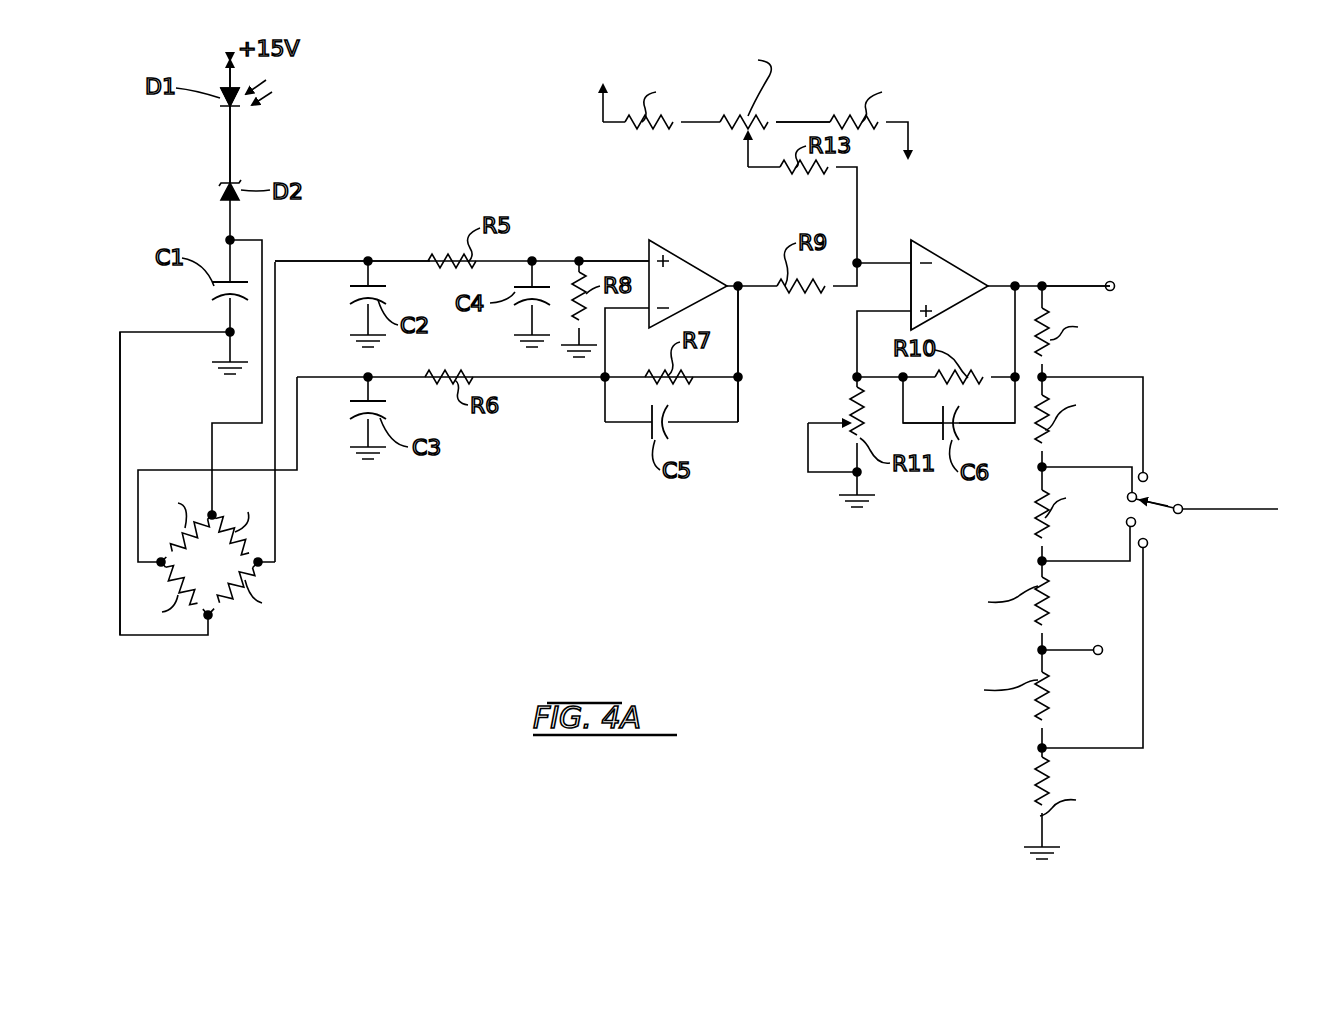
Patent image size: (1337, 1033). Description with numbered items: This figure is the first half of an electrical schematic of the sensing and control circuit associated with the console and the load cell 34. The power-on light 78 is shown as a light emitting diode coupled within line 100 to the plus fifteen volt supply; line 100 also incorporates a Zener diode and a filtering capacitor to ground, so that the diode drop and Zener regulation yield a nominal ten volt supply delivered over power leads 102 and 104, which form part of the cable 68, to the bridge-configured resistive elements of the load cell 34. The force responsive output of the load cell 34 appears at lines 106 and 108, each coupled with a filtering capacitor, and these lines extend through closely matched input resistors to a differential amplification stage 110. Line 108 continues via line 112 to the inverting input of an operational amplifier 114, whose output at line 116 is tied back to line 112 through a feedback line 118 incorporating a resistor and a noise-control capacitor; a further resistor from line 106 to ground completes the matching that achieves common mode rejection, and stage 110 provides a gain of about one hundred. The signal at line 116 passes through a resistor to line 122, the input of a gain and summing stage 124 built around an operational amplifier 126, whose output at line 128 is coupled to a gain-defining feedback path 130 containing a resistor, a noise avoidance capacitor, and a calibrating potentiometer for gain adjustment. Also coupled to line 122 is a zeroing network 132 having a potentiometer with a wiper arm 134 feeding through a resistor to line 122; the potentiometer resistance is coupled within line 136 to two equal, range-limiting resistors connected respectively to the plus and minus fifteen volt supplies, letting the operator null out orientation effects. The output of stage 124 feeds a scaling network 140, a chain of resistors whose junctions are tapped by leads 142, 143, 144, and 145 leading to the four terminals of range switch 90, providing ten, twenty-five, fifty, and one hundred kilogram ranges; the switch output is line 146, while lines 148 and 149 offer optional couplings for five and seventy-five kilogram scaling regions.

The load cell 34 is at (245, 628).
The cable 68 is at (93, 428).
The power-on light 78 is at (218, 108).
The range switch 90 is at (1205, 466).
The line 100 is at (232, 133).
The power lead 102 is at (272, 264).
The power lead 104 is at (120, 493).
The line 106 is at (344, 262).
The line 108 is at (332, 377).
The differential amplification stage 110 is at (718, 205).
The line 112 is at (606, 352).
The operational amplifier 114 is at (690, 262).
The line 116 is at (762, 288).
The feedback line 118 is at (740, 352).
The line 122 is at (875, 263).
The gain and summing stage 124 is at (1018, 215).
The operational amplifier 126 is at (934, 264).
The line 128 is at (1000, 286).
The feedback path 130 is at (985, 362).
The zeroing network 132 is at (913, 65).
The wiper arm 134 is at (748, 162).
The line 136 is at (796, 122).
The scaling network 140 is at (1200, 262).
The lead 142 is at (1100, 377).
The lead 143 is at (1066, 467).
The lead 144 is at (1108, 561).
The lead 145 is at (1072, 748).
The line 146 is at (1235, 509).
The line 148 is at (1076, 286).
The line 149 is at (1075, 650).